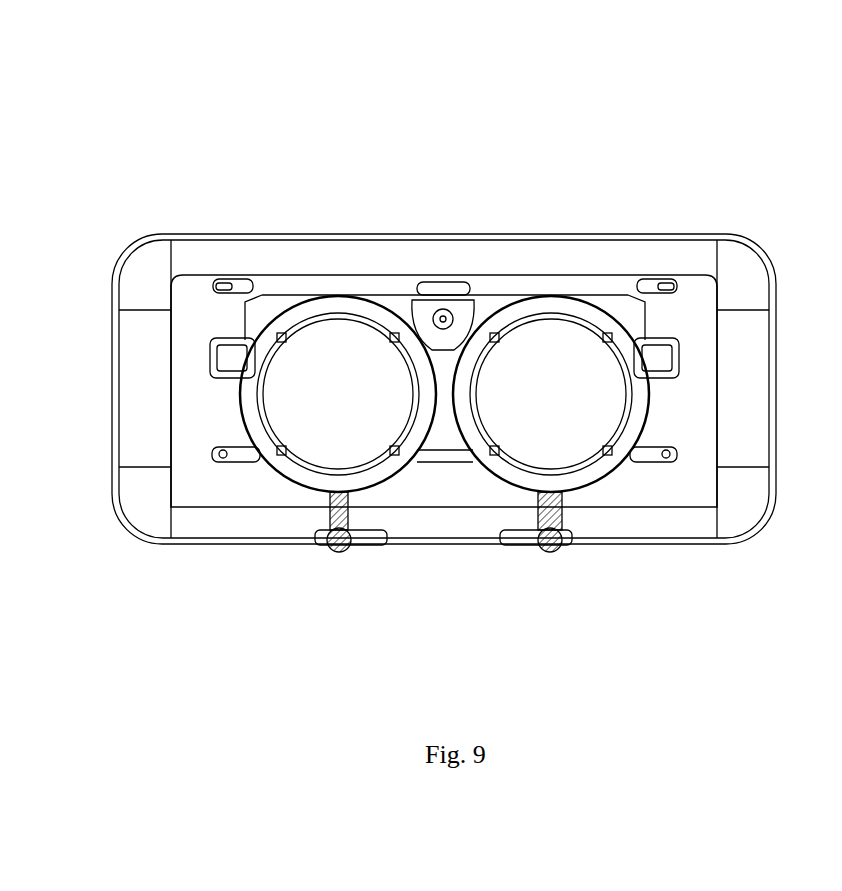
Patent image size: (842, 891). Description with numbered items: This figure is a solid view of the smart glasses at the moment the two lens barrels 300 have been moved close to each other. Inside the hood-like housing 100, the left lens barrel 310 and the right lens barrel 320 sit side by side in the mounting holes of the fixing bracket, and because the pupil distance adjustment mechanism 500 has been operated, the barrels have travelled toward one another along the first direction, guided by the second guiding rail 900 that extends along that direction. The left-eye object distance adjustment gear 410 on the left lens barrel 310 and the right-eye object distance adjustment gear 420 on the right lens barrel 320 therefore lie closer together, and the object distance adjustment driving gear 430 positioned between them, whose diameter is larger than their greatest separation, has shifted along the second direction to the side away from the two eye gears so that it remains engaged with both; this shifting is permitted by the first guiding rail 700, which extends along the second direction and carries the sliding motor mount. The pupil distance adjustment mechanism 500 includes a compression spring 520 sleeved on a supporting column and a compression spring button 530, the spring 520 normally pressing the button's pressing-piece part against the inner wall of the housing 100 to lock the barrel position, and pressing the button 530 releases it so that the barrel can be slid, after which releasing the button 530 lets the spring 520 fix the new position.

The housing 100 is at (130, 263).
The lens barrels 300 is at (618, 84).
The left lens barrel 310 is at (340, 362).
The right lens barrel 320 is at (595, 358).
The left-eye object distance adjustment gear 410 is at (297, 305).
The right-eye object distance adjustment gear 420 is at (550, 542).
The object distance adjustment driving gear 430 is at (457, 317).
The pupil distance adjustment mechanism 500 is at (491, 584).
The compression spring 520 is at (352, 530).
The compression spring button 530 is at (318, 545).
The first guiding rail 700 is at (428, 282).
The second guiding rail 900 is at (467, 457).